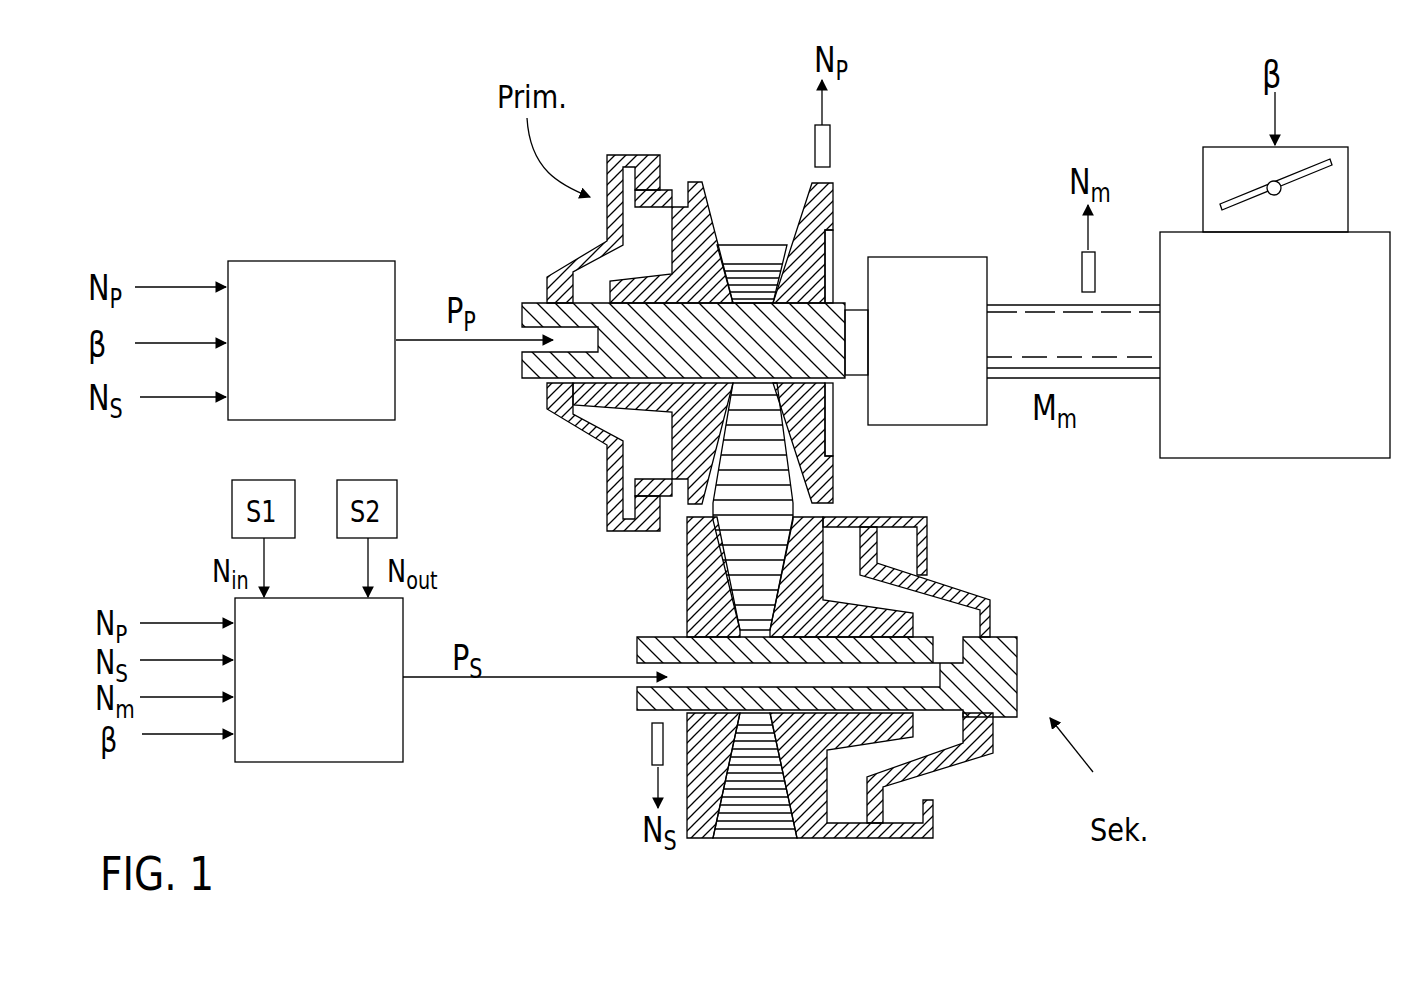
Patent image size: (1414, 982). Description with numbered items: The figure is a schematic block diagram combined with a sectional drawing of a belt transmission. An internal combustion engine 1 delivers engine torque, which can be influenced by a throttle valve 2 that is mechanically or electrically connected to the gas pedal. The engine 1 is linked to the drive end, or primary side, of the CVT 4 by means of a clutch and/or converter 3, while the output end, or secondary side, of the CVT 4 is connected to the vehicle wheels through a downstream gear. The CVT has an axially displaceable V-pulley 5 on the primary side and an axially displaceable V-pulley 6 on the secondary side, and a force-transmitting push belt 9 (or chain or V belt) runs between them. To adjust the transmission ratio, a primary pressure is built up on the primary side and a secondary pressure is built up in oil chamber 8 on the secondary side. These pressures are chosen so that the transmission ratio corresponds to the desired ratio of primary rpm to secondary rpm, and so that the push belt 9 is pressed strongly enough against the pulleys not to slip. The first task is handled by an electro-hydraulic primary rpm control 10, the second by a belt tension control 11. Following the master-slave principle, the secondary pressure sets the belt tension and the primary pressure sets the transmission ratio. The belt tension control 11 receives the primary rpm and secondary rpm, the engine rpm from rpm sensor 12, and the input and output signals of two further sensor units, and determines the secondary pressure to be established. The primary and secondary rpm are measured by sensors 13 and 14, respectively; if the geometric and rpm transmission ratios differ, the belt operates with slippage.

The internal combustion engine 1 is at (1210, 458).
The throttle valve 2 is at (1350, 205).
The clutch and/or converter 3 is at (953, 257).
The CVT 4 is at (845, 238).
The axially displaceable V-pulley 5 is at (710, 203).
The axially displaceable V-pulley 6 is at (813, 827).
The oil chamber 8 is at (923, 743).
The push belt 9 is at (747, 230).
The primary rpm control 10 is at (278, 261).
The belt tension control 11 is at (290, 762).
The rpm sensor 12 is at (1082, 263).
The sensor 13 is at (815, 140).
The sensor 14 is at (652, 740).